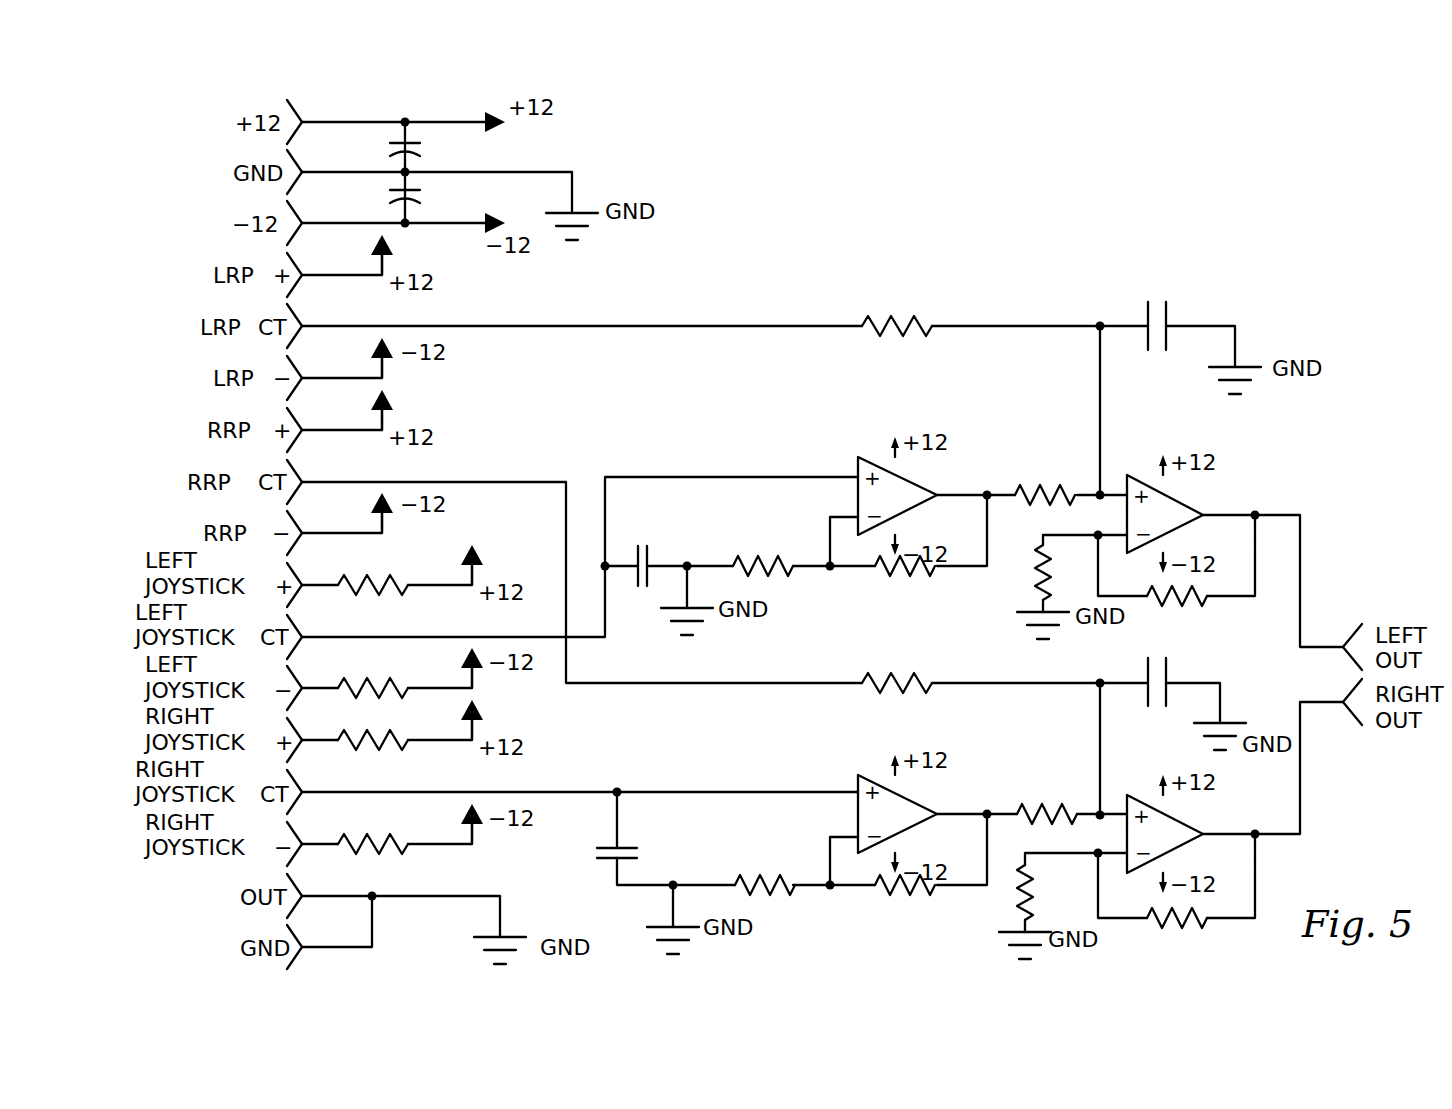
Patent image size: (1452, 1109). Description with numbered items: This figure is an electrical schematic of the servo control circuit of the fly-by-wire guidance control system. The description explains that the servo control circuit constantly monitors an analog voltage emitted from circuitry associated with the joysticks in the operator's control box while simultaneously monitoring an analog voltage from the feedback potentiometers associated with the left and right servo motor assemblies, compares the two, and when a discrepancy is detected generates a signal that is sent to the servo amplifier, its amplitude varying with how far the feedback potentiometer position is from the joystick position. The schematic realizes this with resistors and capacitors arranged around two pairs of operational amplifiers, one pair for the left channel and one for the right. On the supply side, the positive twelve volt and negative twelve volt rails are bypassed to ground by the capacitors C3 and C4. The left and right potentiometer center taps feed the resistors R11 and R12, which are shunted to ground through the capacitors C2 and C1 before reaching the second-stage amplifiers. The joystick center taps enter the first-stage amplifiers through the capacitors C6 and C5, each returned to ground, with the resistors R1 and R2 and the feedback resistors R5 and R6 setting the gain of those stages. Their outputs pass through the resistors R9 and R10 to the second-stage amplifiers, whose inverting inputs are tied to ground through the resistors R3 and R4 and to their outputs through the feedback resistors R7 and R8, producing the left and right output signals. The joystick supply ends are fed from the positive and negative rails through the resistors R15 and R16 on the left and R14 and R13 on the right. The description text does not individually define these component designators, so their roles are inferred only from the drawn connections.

The resistor R1 is at (763, 552).
The resistor R2 is at (765, 870).
The resistor R3 is at (1021, 576).
The resistor R4 is at (1045, 892).
The feedback resistor R5 is at (905, 579).
The feedback resistor R6 is at (905, 898).
The feedback resistor R7 is at (1177, 610).
The feedback resistor R8 is at (1177, 932).
The resistor R9 is at (1045, 481).
The resistor R10 is at (1047, 800).
The resistor R11 is at (897, 310).
The resistor R12 is at (897, 669).
The resistor R13 is at (373, 831).
The resistor R14 is at (373, 727).
The resistor R15 is at (373, 572).
The resistor R16 is at (373, 675).
The capacitor C1 is at (1137, 675).
The capacitor C2 is at (1137, 317).
The decoupling capacitor C3 is at (424, 152).
The decoupling capacitor C4 is at (424, 197).
The capacitor C5 is at (635, 854).
The capacitor C6 is at (636, 553).